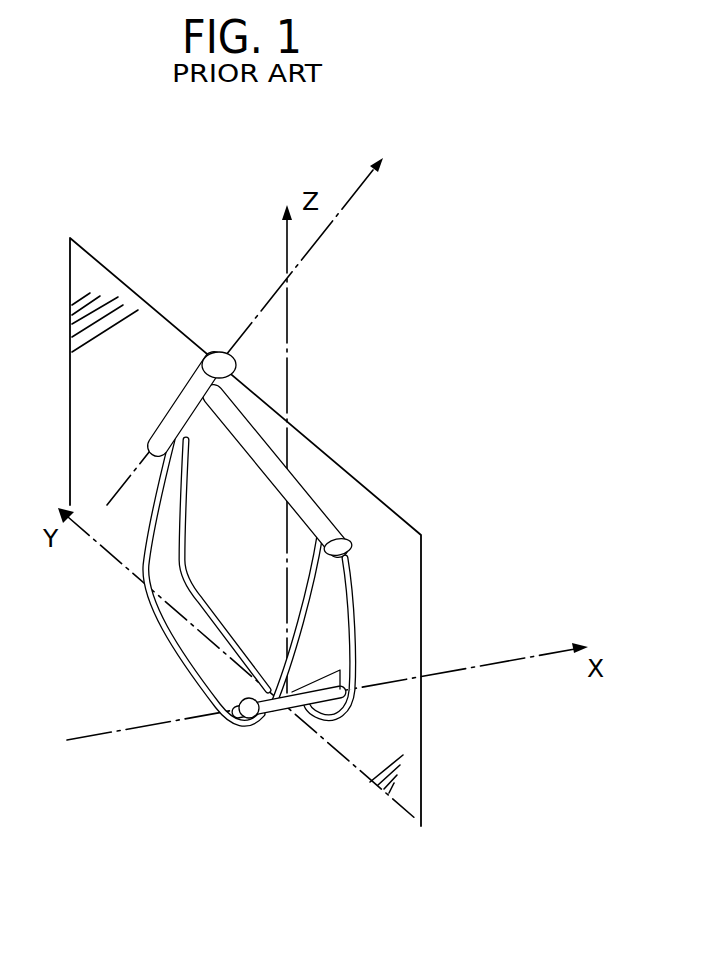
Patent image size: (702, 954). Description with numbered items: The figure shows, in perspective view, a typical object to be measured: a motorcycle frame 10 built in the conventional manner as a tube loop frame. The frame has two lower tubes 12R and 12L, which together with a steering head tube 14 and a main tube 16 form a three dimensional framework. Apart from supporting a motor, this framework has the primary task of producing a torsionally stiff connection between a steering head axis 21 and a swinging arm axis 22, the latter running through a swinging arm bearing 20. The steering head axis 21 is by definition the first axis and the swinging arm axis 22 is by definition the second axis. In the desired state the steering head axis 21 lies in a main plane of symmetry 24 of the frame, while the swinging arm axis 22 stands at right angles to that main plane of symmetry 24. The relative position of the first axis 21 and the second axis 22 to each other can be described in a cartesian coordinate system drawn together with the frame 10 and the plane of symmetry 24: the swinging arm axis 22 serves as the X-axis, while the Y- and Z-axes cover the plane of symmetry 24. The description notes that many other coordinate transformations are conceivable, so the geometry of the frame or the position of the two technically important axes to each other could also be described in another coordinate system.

The motorcycle frame 10 is at (238, 533).
The lower tube 12L is at (141, 614).
The lower tube 12R is at (188, 516).
The steering head tube 14 is at (196, 378).
The main tube 16 is at (247, 428).
The swinging arm bearing 20 is at (281, 702).
The steering head axis 21 is at (360, 188).
The swinging arm axis 22 is at (550, 652).
The main plane of symmetry 24 is at (386, 520).